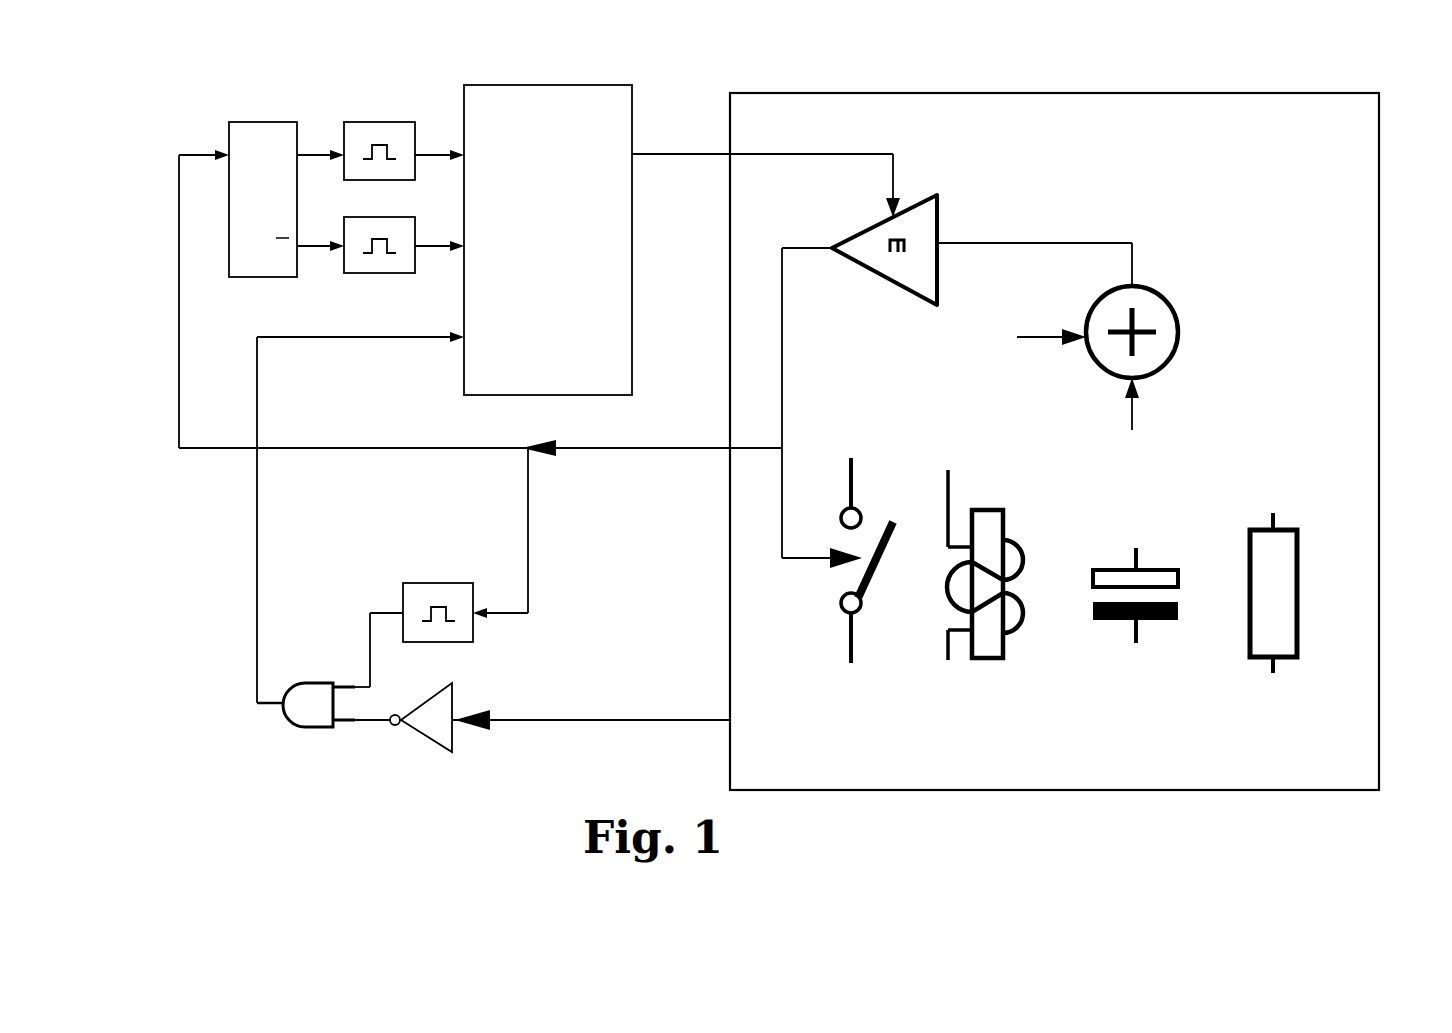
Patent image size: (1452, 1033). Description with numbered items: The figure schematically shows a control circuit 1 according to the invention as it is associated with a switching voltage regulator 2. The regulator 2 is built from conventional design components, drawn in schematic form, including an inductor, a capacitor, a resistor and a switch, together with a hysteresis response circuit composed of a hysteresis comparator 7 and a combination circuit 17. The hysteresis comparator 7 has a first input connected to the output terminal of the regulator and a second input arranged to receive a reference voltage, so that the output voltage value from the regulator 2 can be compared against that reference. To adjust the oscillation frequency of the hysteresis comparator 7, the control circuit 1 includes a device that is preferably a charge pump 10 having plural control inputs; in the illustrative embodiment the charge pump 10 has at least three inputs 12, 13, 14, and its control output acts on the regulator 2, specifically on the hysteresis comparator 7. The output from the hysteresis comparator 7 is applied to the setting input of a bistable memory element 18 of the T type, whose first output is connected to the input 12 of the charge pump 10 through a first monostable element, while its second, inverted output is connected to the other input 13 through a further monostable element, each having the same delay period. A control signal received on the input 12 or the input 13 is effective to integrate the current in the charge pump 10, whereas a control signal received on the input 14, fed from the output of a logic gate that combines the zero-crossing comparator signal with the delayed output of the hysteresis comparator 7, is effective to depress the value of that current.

The control circuit 1 is at (660, 75).
The switching voltage regulator 2 is at (1357, 210).
The hysteresis comparator 7 is at (918, 262).
The charge pump 10 is at (616, 137).
The input 12 is at (464, 150).
The input 13 is at (464, 243).
The input 14 is at (464, 340).
The combination circuit 17 is at (1178, 318).
The bistable memory element 18 is at (257, 255).